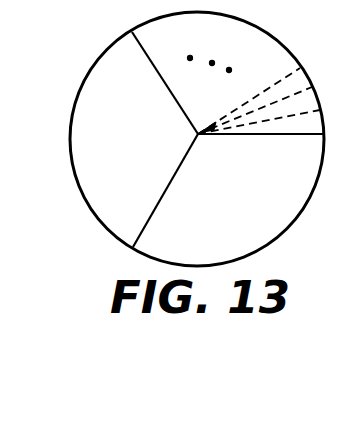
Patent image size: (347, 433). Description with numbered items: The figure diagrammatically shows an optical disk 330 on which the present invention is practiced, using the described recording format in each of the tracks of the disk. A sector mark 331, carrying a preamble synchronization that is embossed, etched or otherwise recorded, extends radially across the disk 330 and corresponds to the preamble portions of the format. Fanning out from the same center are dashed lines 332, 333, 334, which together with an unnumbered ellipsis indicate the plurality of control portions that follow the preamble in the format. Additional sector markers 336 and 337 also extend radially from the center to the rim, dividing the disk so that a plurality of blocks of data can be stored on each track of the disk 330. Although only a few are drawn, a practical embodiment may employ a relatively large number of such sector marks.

The optical disk 330 is at (303, 220).
The sector mark 331 is at (243, 138).
The dashed line 332 is at (280, 120).
The dashed line 333 is at (287, 100).
The dashed line 334 is at (238, 115).
The additional sector marker 336 is at (157, 70).
The additional sector marker 337 is at (142, 230).